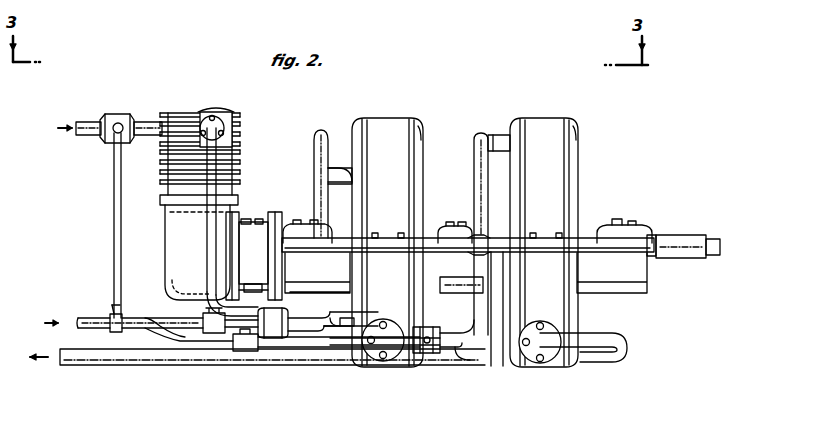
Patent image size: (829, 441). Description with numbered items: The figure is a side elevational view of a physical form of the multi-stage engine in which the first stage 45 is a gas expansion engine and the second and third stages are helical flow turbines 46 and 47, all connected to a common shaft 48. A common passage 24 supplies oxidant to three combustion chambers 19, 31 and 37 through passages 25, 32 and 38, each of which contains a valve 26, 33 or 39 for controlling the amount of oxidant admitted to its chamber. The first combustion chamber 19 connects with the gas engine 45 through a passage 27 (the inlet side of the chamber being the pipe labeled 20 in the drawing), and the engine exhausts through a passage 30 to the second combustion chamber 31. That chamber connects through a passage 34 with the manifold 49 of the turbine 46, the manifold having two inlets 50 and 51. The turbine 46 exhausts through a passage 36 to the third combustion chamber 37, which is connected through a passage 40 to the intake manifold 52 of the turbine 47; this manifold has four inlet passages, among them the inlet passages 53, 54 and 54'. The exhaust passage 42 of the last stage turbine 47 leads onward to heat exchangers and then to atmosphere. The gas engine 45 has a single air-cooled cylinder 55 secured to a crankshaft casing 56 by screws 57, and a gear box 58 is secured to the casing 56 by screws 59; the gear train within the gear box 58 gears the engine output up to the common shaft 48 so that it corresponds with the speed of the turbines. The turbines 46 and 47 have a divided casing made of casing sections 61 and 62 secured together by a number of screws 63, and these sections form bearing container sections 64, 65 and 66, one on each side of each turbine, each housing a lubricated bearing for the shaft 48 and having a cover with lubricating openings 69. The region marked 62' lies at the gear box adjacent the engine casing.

The combustion chamber 19 is at (119, 115).
The inlet pipe 20 is at (80, 136).
The common passage 24 is at (73, 318).
The passage 25 is at (114, 243).
The valve 26 is at (110, 316).
The passage 27 is at (148, 122).
The passage 30 is at (217, 220).
The combustion chamber 31 is at (279, 340).
The passage 32 is at (196, 321).
The valve 33 is at (211, 315).
The passage 34 is at (314, 334).
The passage 36 is at (402, 347).
The combustion chamber 37 is at (430, 354).
The passage 38 is at (210, 348).
The valve 39 is at (248, 352).
The passage 40 is at (455, 333).
The exhaust passage 42 is at (603, 363).
The gas engine 45 is at (201, 112).
The helical flow turbine 46 is at (402, 118).
The helical flow turbine 47 is at (539, 118).
The common shaft 48 is at (695, 235).
The manifold 49 is at (314, 190).
The inlet 50 is at (346, 176).
The inlet 51 is at (356, 318).
The intake manifold 52 is at (474, 181).
The inlet passage 53 is at (500, 135).
The inlet passage 54 is at (496, 323).
The inlet passage 54' is at (471, 255).
The air-cooled cylinder 55 is at (168, 182).
The crankshaft casing 56 is at (168, 270).
The screws 57 is at (160, 200).
The gear box 58 is at (274, 225).
The screws 59 is at (242, 222).
The casing section 61 is at (423, 140).
The casing section 62 is at (459, 356).
The pump block 62' is at (254, 255).
The screws 63 is at (383, 238).
The bearing container section 64 is at (303, 228).
The bearing container section 65 is at (446, 227).
The bearing container section 66 is at (642, 238).
The lubricating openings 69 is at (614, 226).